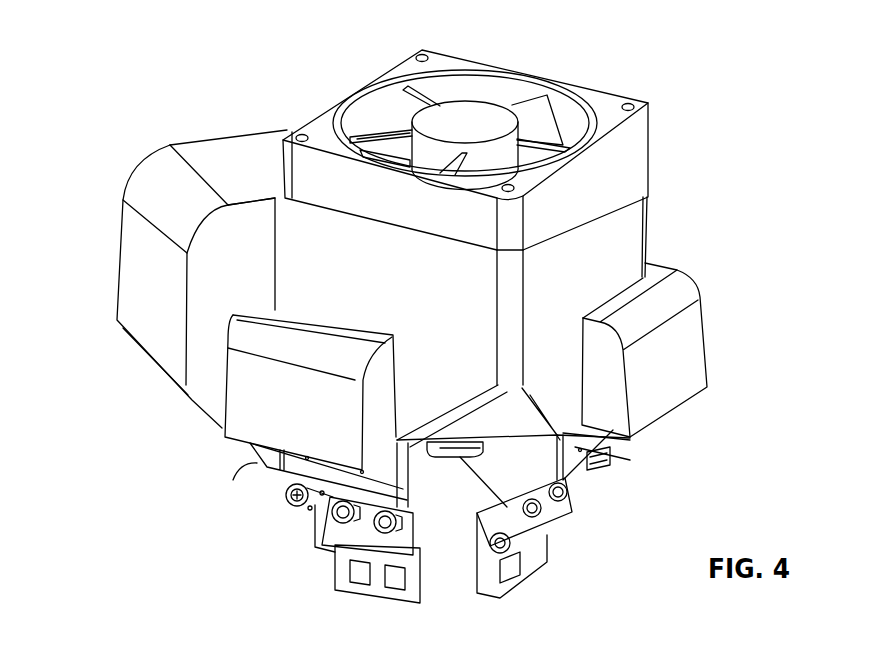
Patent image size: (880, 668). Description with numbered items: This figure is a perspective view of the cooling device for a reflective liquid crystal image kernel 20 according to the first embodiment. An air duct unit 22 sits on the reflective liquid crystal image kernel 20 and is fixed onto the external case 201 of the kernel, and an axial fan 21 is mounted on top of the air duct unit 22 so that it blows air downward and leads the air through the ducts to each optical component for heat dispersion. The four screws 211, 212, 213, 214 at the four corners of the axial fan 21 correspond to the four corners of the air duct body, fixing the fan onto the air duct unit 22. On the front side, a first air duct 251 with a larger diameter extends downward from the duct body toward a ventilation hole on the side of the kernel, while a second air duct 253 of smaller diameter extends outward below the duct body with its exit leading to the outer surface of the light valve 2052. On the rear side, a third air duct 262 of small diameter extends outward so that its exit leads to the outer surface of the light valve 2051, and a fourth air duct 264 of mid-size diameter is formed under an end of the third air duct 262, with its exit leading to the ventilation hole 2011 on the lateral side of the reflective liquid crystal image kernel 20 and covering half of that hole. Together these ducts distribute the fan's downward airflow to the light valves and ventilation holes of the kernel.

The reflective liquid crystal image kernel 20 is at (300, 562).
The axial fan 21 is at (628, 150).
The air duct unit 22 is at (637, 237).
The external case 201 is at (525, 485).
The screw 211 is at (418, 56).
The screw 212 is at (645, 103).
The screw 213 is at (520, 186).
The screw 214 is at (297, 135).
The first air duct 251 is at (130, 233).
The second air duct 253 is at (243, 390).
The third air duct 262 is at (690, 350).
The fourth air duct 264 is at (513, 430).
The ventilation hole 2011 is at (537, 553).
The light valve 2051 is at (600, 443).
The light valve 2052 is at (263, 463).